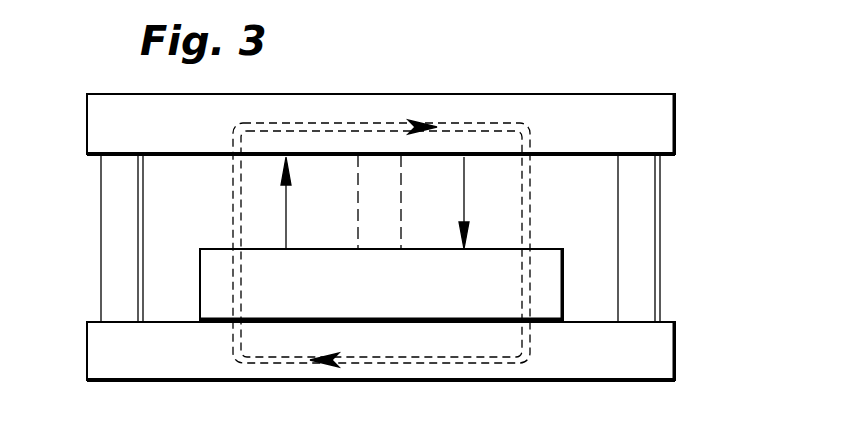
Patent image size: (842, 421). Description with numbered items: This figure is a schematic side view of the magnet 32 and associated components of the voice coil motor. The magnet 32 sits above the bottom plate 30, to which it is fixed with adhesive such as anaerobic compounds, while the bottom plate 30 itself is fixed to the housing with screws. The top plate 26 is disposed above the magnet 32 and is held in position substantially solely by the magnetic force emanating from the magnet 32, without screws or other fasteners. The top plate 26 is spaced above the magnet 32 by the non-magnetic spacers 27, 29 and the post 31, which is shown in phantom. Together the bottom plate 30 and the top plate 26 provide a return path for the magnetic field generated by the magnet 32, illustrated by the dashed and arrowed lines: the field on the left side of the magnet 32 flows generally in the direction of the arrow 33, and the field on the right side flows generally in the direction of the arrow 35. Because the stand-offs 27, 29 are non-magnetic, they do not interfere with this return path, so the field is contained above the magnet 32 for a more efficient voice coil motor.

The top plate 26 is at (87, 118).
The non-magnetic spacer 27 is at (110, 216).
The non-magnetic spacer 29 is at (640, 223).
The bottom plate 30 is at (105, 346).
The post 31 is at (358, 170).
The magnet 32 is at (204, 273).
The arrow 33 is at (285, 197).
The arrow 35 is at (466, 202).